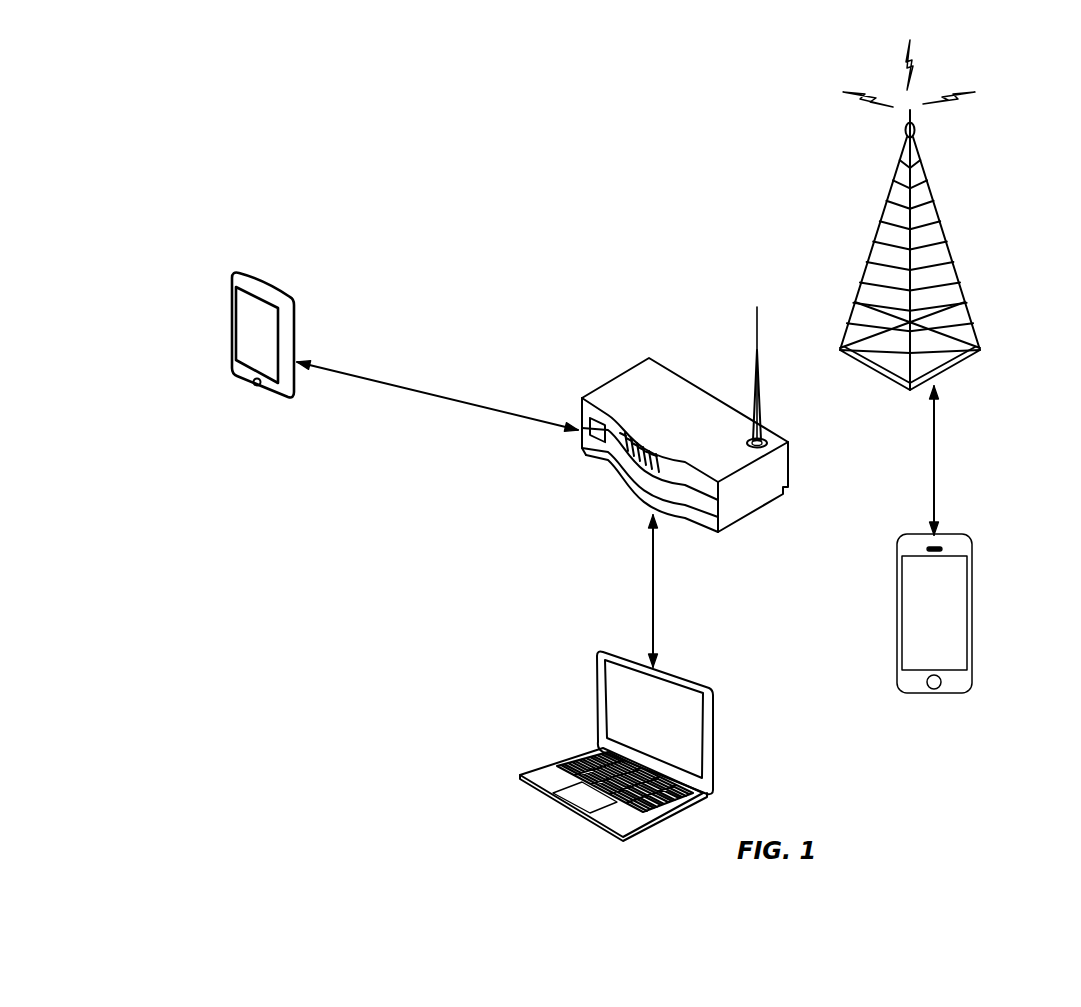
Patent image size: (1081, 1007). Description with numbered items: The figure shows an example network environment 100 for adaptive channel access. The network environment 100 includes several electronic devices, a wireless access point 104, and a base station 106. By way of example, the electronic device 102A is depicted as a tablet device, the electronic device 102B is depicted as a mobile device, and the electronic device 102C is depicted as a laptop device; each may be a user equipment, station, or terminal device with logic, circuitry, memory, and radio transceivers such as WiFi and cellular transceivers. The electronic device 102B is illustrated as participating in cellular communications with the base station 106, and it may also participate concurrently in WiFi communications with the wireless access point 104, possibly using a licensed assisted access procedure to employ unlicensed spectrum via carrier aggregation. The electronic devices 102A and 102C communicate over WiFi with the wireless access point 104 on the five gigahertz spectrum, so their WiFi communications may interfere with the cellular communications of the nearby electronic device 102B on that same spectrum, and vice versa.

The network environment 100 is at (293, 121).
The electronic device 102A is at (231, 293).
The electronic device 102B is at (973, 614).
The electronic device 102C is at (598, 697).
The wireless access point 104 is at (690, 381).
The base station 106 is at (960, 275).